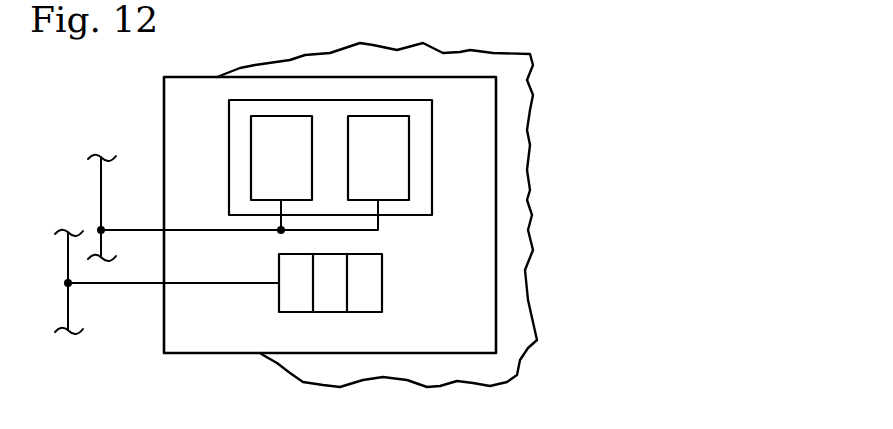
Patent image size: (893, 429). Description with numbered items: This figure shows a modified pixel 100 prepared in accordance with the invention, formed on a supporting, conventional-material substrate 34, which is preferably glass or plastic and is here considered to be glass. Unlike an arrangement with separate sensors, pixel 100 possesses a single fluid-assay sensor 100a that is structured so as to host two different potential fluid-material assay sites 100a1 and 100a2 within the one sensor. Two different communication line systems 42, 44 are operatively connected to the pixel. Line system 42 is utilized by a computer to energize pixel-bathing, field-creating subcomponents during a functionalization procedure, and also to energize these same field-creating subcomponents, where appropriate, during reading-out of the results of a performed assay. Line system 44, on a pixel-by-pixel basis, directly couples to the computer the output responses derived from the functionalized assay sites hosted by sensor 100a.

The pixel 100 is at (415, 76).
The sensor 100a is at (433, 150).
The potential assay site 100a1 is at (284, 115).
The potential assay site 100a2 is at (400, 201).
The substrate 34 is at (522, 253).
The line system 44 is at (102, 179).
The line system 42 is at (113, 283).